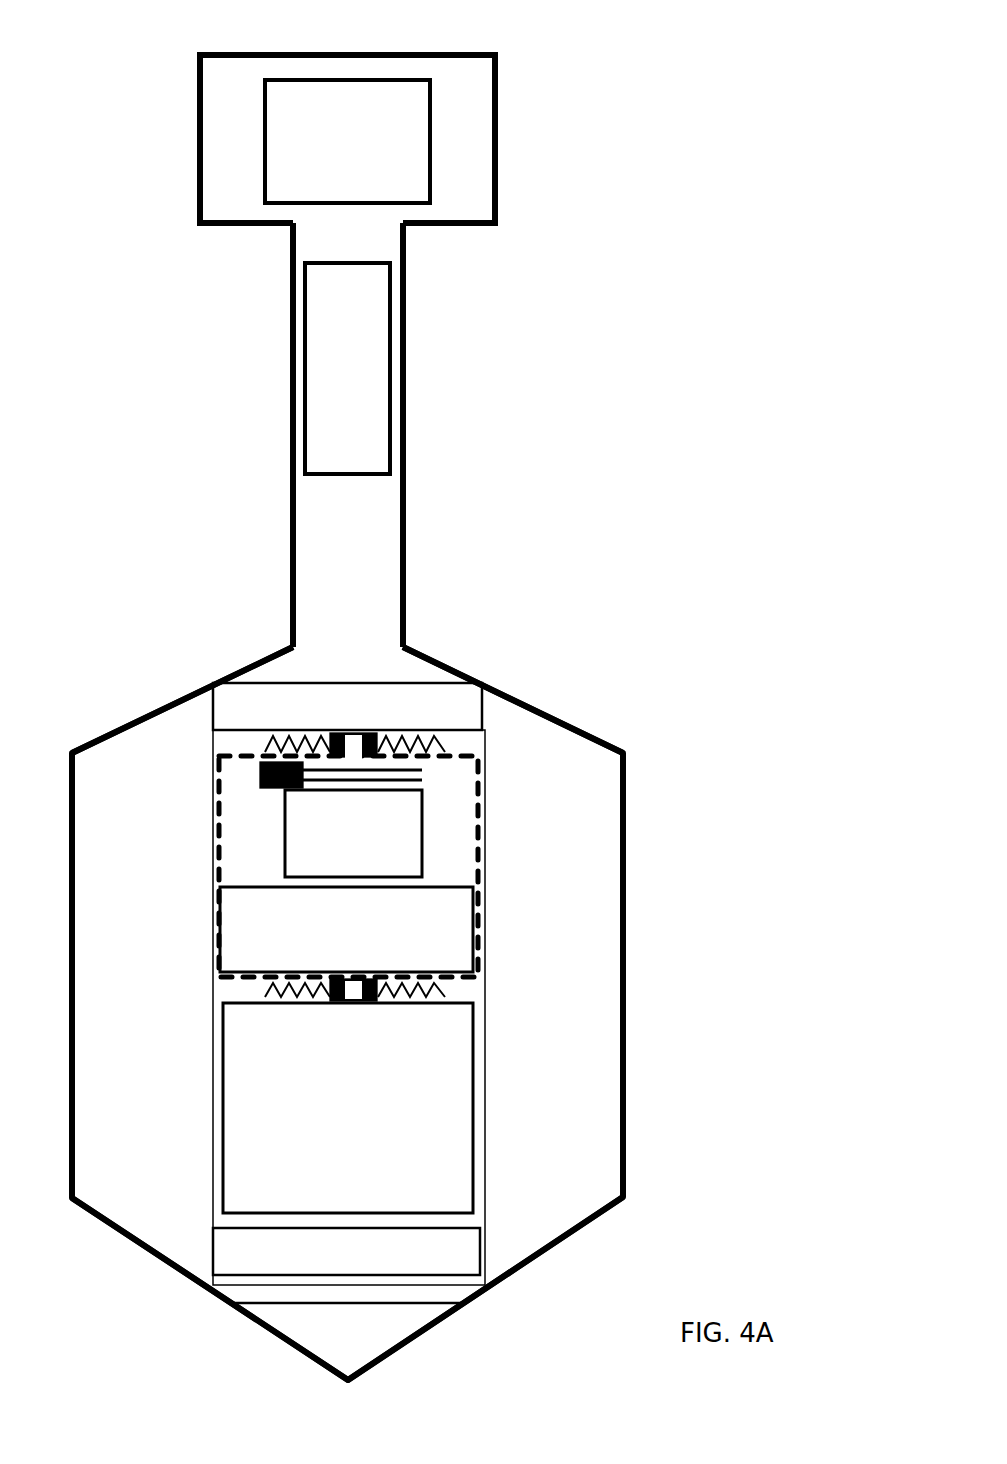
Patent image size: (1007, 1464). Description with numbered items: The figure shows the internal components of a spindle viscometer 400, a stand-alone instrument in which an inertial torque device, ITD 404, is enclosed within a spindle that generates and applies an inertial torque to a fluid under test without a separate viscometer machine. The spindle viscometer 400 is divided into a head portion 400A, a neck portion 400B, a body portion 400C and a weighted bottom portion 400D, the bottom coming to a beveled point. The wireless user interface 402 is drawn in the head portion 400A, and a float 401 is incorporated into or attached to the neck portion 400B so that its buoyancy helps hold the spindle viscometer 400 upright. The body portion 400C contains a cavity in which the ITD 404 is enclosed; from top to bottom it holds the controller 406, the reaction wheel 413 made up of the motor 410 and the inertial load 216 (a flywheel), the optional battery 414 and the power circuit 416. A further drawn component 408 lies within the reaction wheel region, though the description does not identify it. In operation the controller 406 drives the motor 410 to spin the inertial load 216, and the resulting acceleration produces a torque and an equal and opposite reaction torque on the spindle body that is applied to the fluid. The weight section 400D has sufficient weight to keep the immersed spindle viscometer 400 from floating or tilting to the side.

The spindle viscometer 400 is at (347, 693).
The head portion 400A is at (384, 139).
The neck portion 400B is at (386, 435).
The body portion 400C is at (386, 1007).
The weighted bottom portion 400D is at (347, 1288).
The float 401 is at (347, 368).
The wireless user interface 402 is at (347, 141).
The ITD 404 is at (347, 700).
The controller 406 is at (347, 706).
The clutch / coupling 408 is at (262, 772).
The motor 410 is at (353, 833).
The reaction wheel 413 is at (486, 800).
The optional battery 414 is at (348, 1108).
The power circuit 416 is at (346, 1251).
The inertial load 216 is at (346, 930).